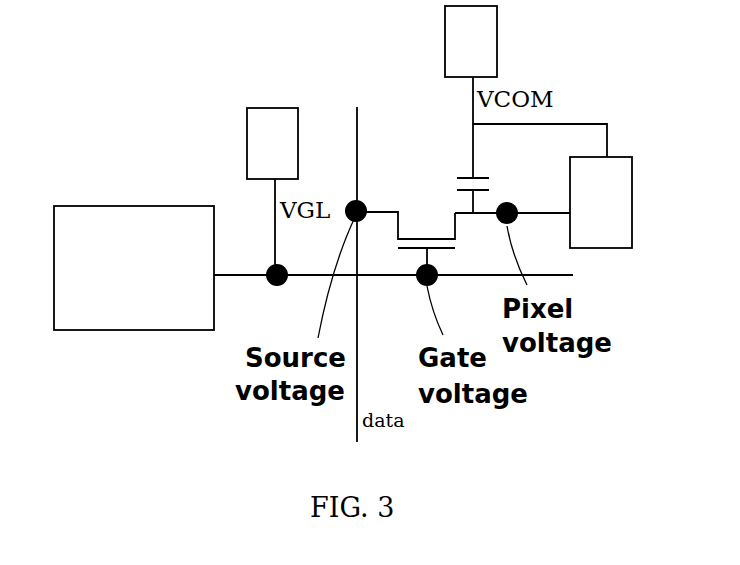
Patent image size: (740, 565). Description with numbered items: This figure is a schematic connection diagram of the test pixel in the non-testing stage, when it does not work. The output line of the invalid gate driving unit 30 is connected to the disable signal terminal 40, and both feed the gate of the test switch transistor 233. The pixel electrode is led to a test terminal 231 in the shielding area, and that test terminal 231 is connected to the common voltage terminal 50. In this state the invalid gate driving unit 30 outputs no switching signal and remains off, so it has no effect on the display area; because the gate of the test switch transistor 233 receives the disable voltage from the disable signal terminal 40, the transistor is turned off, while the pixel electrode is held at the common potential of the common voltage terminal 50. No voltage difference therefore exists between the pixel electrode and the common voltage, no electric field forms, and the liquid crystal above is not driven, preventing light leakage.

The invalid gate driving unit 30 is at (134, 268).
The disable signal terminal 40 is at (272, 143).
The common voltage terminal 50 is at (471, 41).
The test terminal 231 is at (601, 202).
The test switch transistor 233 is at (410, 240).